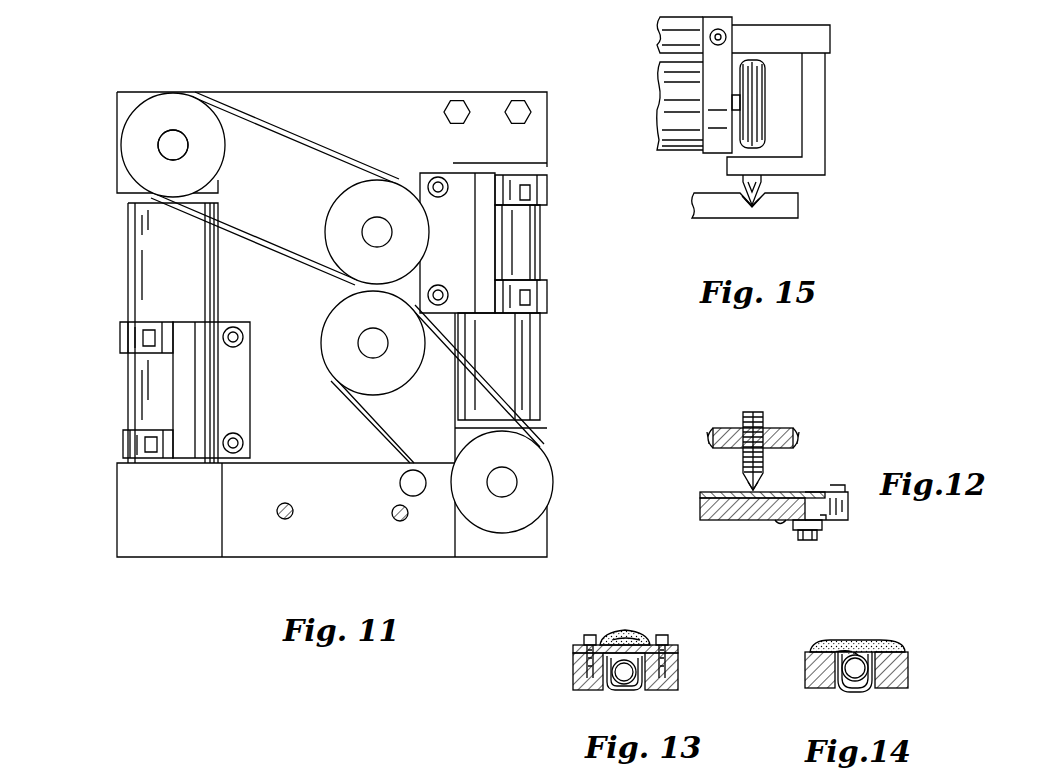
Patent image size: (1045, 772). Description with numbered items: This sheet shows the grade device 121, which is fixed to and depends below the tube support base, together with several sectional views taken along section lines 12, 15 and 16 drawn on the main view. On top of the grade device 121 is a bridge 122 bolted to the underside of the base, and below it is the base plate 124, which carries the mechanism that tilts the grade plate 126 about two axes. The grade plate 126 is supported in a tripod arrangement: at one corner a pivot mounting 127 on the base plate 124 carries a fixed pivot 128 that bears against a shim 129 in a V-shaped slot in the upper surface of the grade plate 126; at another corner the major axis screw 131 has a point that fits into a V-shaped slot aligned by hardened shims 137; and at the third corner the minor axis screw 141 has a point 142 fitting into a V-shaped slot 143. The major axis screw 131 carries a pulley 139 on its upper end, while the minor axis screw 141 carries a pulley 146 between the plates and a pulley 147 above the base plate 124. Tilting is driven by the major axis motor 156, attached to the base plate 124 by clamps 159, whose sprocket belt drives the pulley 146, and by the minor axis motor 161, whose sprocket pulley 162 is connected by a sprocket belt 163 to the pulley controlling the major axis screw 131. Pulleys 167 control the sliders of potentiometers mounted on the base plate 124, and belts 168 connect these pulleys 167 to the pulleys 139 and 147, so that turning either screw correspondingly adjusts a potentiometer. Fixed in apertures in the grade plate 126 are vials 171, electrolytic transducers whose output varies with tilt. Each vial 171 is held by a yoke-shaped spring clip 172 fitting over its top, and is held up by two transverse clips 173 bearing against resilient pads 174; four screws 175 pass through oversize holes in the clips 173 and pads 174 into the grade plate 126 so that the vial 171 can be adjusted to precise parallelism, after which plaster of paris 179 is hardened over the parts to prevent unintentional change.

In FIG. 11, the grade device 121 is at (375, 88).
In FIG. 11, the bridge 122 is at (348, 506).
In FIG. 11, the base plate 124 is at (285, 287).
In FIG. 15, the base plate 124 is at (805, 35).
In FIG. 15, the grade plate 126 is at (793, 205).
In FIG. 13, the grade plate 126 is at (678, 683).
In FIG. 15, the pivot mounting 127 is at (815, 128).
In FIG. 15, the fixed pivot 128 is at (765, 181).
In FIG. 15, the shim 129 is at (758, 208).
In FIG. 11, the major axis screw 131 is at (507, 484).
In FIG. 12, the hardened shims 137 is at (700, 490).
In FIG. 11, the pulley 139 is at (548, 478).
In FIG. 12, the minor axis screw 141 is at (762, 417).
In FIG. 12, the point 142 is at (752, 493).
In FIG. 11, the V-shaped slot 143 is at (168, 140).
In FIG. 12, the pulley 146 is at (792, 430).
In FIG. 11, the pulley 147 is at (130, 130).
In FIG. 11, the major axis motor 156 is at (545, 245).
In FIG. 11, the clamps 159 is at (547, 190).
In FIG. 11, the minor axis motor 161 is at (182, 293).
In FIG. 15, the minor axis motor 161 is at (675, 108).
In FIG. 15, the sprocket pulley 162 is at (760, 85).
In FIG. 15, the sprocket belt 163 is at (748, 76).
In FIG. 12, the sprocket belt 163 is at (800, 440).
In FIG. 11, the pulleys 167 is at (335, 205).
In FIG. 11, the belts 168 is at (292, 135).
In FIG. 12, the vials 171 is at (782, 522).
In FIG. 13, the vials 171 is at (637, 690).
In FIG. 14, the vials 171 is at (851, 655).
In FIG. 13, the yoke-shaped clip 172 is at (612, 692).
In FIG. 14, the yoke-shaped clip 172 is at (845, 692).
In FIG. 13, the transverse clips 173 is at (630, 642).
In FIG. 12, the resilient pads 174 is at (822, 526).
In FIG. 13, the resilient pads 174 is at (676, 650).
In FIG. 12, the screws 175 is at (820, 538).
In FIG. 13, the screws 175 is at (588, 640).
In FIG. 13, the plaster of paris 179 is at (610, 640).
In FIG. 14, the plaster of paris 179 is at (856, 650).
In FIG. 11, the section line 12 is at (198, 23).
In FIG. 11, the section line 15 is at (120, 398).
In FIG. 11, the section line 16 is at (500, 397).